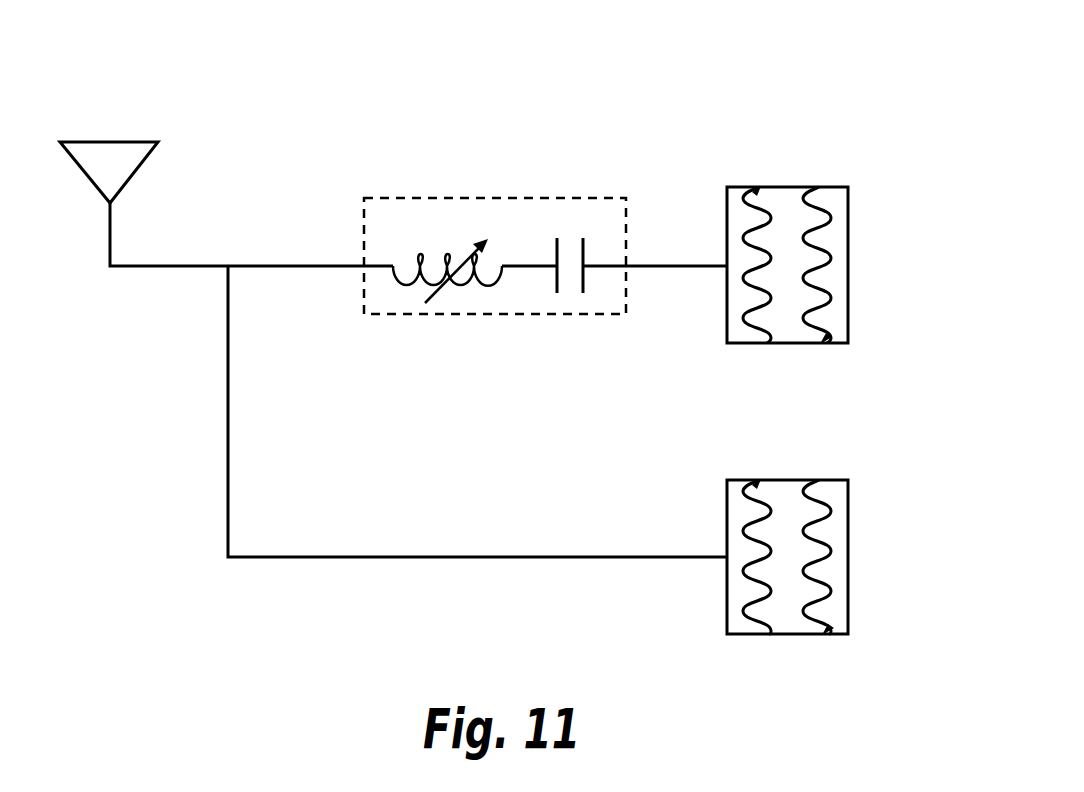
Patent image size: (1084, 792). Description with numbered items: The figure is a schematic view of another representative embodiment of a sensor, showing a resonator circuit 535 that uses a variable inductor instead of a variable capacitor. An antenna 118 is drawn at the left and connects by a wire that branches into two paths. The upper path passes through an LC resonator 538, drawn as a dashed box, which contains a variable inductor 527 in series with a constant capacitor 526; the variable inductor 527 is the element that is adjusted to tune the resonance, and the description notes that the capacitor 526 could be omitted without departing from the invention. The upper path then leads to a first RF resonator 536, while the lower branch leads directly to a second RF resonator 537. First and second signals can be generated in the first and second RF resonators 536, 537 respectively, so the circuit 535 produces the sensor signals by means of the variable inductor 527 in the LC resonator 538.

The antenna 118 is at (93, 140).
The resonator circuit 535 is at (579, 74).
The LC resonator 538 is at (405, 198).
The variable inductor 527 is at (402, 287).
The constant capacitor 526 is at (581, 282).
The first RF resonator 536 is at (849, 212).
The second RF resonator 537 is at (849, 520).